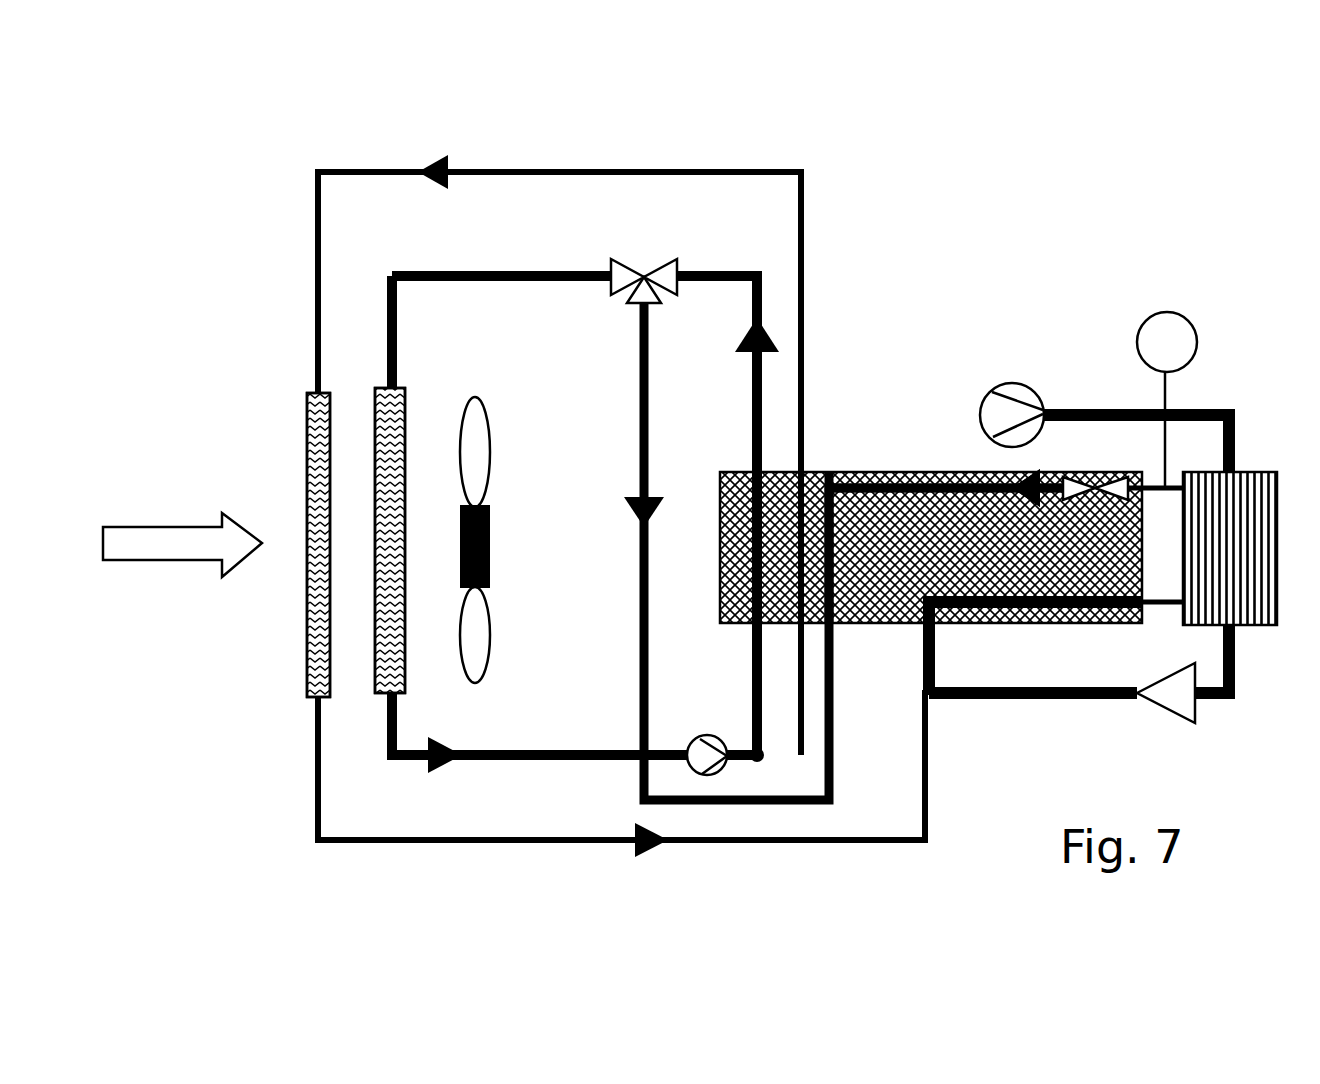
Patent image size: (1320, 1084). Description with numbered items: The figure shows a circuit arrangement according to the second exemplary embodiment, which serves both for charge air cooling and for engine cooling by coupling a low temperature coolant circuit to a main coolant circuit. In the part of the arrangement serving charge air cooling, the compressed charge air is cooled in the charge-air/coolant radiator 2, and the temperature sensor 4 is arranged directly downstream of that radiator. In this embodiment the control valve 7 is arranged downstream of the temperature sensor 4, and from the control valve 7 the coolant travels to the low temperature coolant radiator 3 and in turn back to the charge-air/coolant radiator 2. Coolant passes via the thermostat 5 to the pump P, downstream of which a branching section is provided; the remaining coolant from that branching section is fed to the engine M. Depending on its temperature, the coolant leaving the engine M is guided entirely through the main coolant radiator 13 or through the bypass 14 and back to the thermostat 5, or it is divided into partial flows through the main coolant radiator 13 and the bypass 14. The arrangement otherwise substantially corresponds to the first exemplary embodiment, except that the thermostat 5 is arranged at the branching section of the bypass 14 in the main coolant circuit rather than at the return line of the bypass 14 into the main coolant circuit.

The charge-air/coolant radiator 2 is at (1243, 600).
The low temperature coolant radiator 3 is at (307, 458).
The sensor 4 is at (1193, 337).
The thermostat 5 is at (646, 276).
The control valve 7 is at (1092, 477).
The main coolant radiator 13 is at (378, 575).
The bypass 14 is at (638, 425).
The engine M is at (929, 530).
The pump P is at (713, 770).